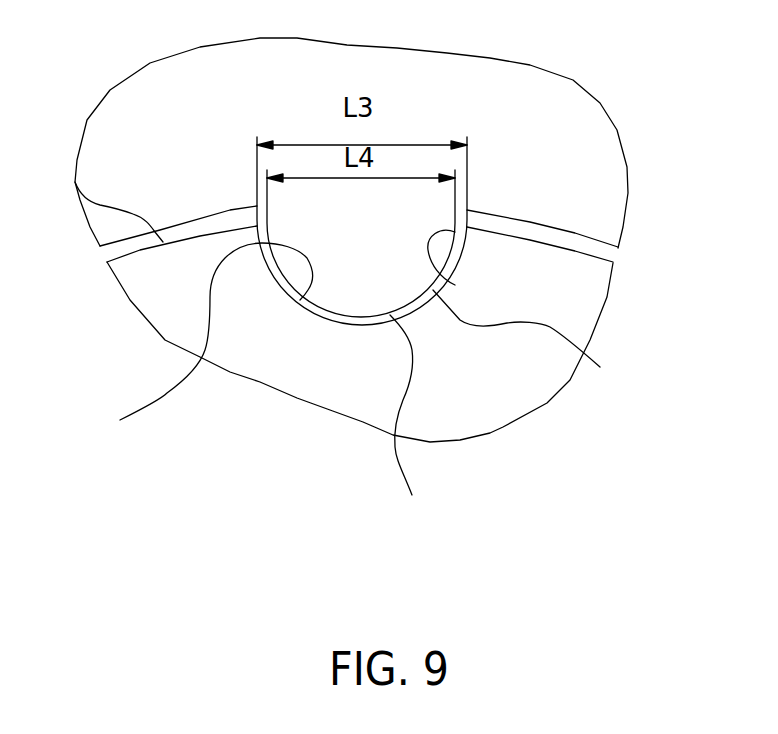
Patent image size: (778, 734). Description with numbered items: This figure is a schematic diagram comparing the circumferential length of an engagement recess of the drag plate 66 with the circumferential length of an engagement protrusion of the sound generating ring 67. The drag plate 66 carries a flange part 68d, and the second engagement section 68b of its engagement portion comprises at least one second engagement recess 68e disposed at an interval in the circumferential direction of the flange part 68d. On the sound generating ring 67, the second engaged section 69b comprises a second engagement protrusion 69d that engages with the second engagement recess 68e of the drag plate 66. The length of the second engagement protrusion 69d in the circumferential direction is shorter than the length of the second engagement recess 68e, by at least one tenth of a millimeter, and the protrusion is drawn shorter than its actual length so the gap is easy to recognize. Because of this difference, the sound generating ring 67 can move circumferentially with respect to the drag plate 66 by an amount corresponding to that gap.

The drag plate 66 is at (535, 422).
The sound generating ring 67 is at (617, 107).
The second engagement section 68b is at (470, 237).
The flange part 68d is at (75, 182).
The second engagement recess 68e is at (184, 347).
The second engaged section 69b is at (548, 349).
The second engagement protrusion 69d is at (420, 430).